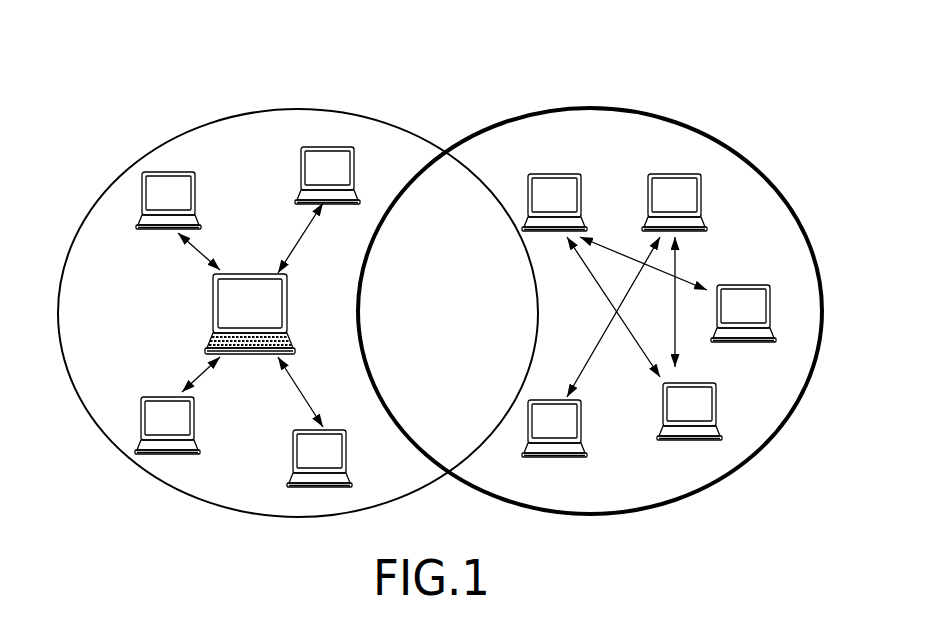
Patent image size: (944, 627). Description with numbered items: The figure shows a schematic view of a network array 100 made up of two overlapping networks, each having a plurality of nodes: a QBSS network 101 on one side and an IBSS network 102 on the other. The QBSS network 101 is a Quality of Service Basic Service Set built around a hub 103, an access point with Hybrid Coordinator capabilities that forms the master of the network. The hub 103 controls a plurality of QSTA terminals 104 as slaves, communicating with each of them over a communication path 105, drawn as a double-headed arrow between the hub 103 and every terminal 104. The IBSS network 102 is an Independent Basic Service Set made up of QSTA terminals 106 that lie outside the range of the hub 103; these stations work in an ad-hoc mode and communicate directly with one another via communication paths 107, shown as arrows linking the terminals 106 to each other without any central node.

The network array 100 is at (730, 73).
The QBSS network 101 is at (326, 93).
The IBSS network 102 is at (648, 93).
The hub 103 is at (213, 303).
The QSTA terminals 104 is at (301, 170).
The communication path 105 is at (306, 230).
The QSTA terminals 106 is at (647, 188).
The communication paths 107 is at (612, 250).